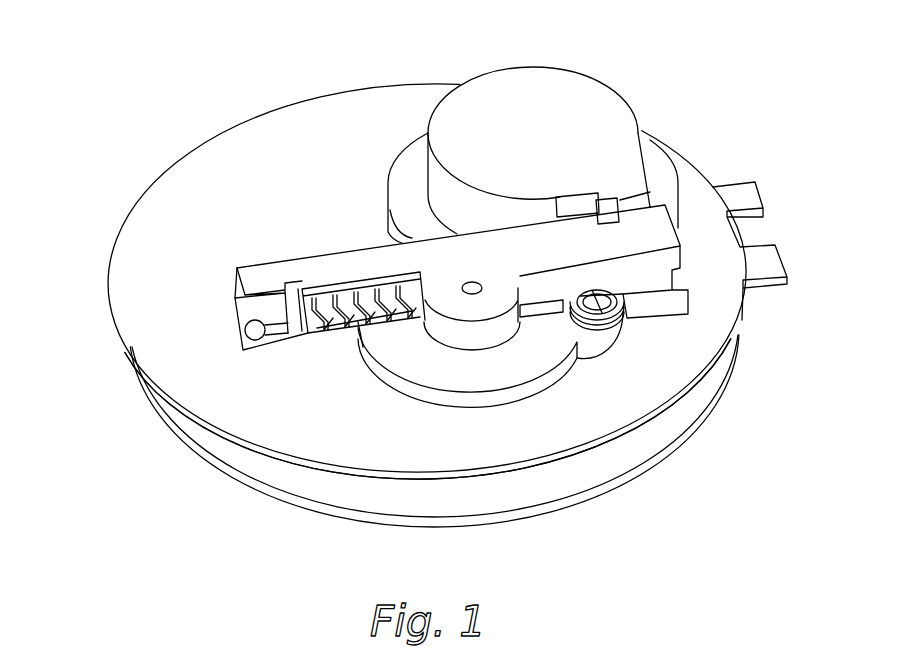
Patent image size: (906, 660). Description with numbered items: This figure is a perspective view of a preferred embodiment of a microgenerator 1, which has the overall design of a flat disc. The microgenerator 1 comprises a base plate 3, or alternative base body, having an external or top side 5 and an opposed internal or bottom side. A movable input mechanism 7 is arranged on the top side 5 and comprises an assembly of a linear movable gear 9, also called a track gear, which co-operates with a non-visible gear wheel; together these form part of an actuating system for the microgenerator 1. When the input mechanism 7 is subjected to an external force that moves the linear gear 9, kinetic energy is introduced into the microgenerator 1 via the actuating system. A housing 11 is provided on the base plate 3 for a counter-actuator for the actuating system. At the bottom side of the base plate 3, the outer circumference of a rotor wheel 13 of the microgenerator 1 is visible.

The microgenerator 1 is at (141, 67).
The base plate 3 is at (143, 243).
The top side 5 is at (267, 138).
The movable input mechanism 7 is at (344, 258).
The linear movable gear 9 is at (338, 325).
The housing 11 is at (537, 124).
The rotor wheel 13 is at (313, 497).